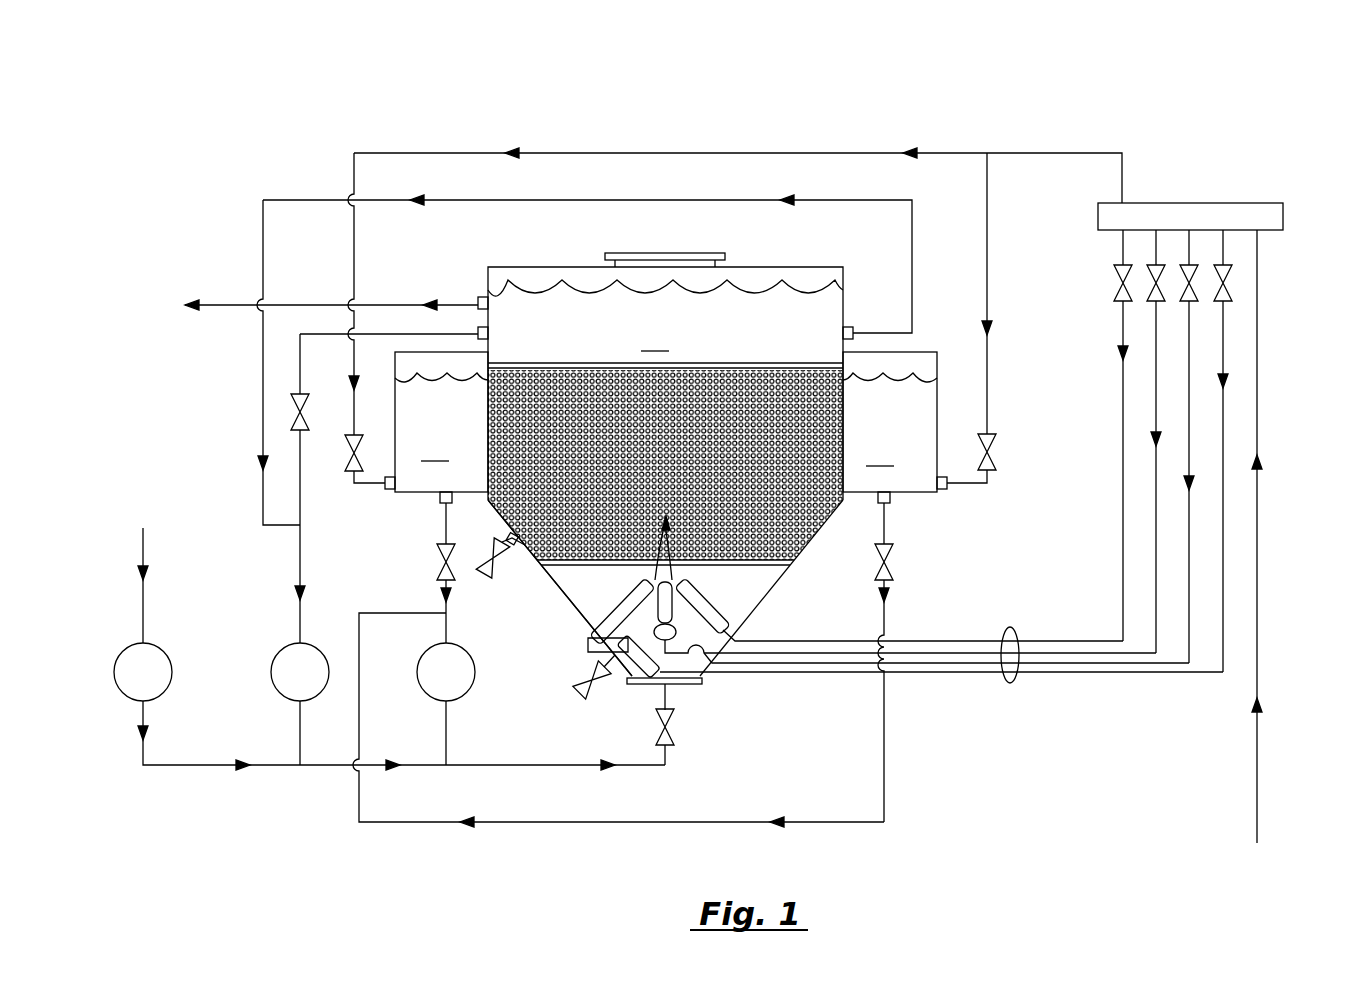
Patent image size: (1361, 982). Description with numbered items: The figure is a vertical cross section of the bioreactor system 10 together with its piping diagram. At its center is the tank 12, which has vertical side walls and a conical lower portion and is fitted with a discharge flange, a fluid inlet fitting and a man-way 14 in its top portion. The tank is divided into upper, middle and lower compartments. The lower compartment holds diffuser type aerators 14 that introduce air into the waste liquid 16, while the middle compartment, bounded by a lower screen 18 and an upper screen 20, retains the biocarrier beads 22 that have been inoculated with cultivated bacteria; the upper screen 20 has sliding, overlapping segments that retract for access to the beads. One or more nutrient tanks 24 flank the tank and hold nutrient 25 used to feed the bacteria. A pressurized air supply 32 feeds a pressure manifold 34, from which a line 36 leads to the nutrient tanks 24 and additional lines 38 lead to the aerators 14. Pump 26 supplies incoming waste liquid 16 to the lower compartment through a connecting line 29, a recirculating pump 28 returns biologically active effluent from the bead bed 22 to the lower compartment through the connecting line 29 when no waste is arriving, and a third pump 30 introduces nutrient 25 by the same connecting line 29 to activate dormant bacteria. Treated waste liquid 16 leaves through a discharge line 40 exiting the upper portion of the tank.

The bioreactor system 10 is at (280, 140).
The tank 12 is at (778, 553).
The diffuser type aerators 14 is at (725, 256).
The waste liquid 16 is at (665, 316).
The lower screen 18 is at (570, 567).
The upper screen 20 is at (568, 363).
The biocarrier beads 22 is at (843, 423).
The nutrient tanks 24 is at (395, 433).
The nutrient 25 is at (666, 420).
The pump 26 is at (118, 655).
The recirculating pump 28 is at (275, 650).
The connecting line 29 is at (540, 752).
The third pump 30 is at (470, 685).
The pressurized air supply 32 is at (1257, 797).
The pressure manifold 34 is at (1272, 212).
The line 36 is at (1085, 148).
The additional lines 38 is at (1008, 632).
The discharge line 40 is at (233, 310).